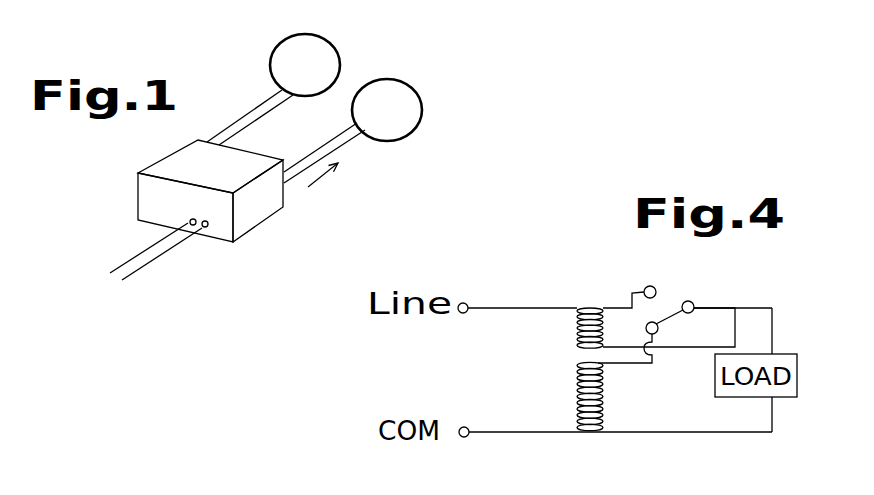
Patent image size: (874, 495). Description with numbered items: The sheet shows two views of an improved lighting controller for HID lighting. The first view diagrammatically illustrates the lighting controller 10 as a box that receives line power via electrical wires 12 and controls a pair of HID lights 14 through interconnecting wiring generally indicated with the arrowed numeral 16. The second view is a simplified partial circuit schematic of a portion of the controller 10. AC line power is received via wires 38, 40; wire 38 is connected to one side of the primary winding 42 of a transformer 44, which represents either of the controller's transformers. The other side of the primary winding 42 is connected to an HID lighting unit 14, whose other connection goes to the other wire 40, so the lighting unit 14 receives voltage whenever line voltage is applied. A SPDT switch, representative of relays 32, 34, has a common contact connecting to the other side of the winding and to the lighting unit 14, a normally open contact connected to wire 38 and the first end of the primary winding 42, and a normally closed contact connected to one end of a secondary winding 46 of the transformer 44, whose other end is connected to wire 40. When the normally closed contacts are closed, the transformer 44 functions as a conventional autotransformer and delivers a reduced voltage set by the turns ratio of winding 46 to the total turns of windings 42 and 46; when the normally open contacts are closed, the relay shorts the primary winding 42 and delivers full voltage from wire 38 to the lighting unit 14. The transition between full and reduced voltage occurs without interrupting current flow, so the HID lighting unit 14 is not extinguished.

In FIG. 1, the lighting controller 10 is at (247, 212).
In FIG. 1, the electrical wires 12 is at (148, 285).
In FIG. 1, the HID lights 14 is at (272, 52).
In FIG. 1, the interconnecting wiring 16 is at (325, 192).
In FIG. 4, the relay 32 is at (712, 301).
In FIG. 4, the relay 34 is at (678, 295).
In FIG. 4, the wire 38 is at (490, 310).
In FIG. 4, the wire 40 is at (498, 430).
In FIG. 4, the primary winding 42 is at (573, 313).
In FIG. 4, the transformer 44 is at (553, 400).
In FIG. 4, the secondary winding 46 is at (608, 408).